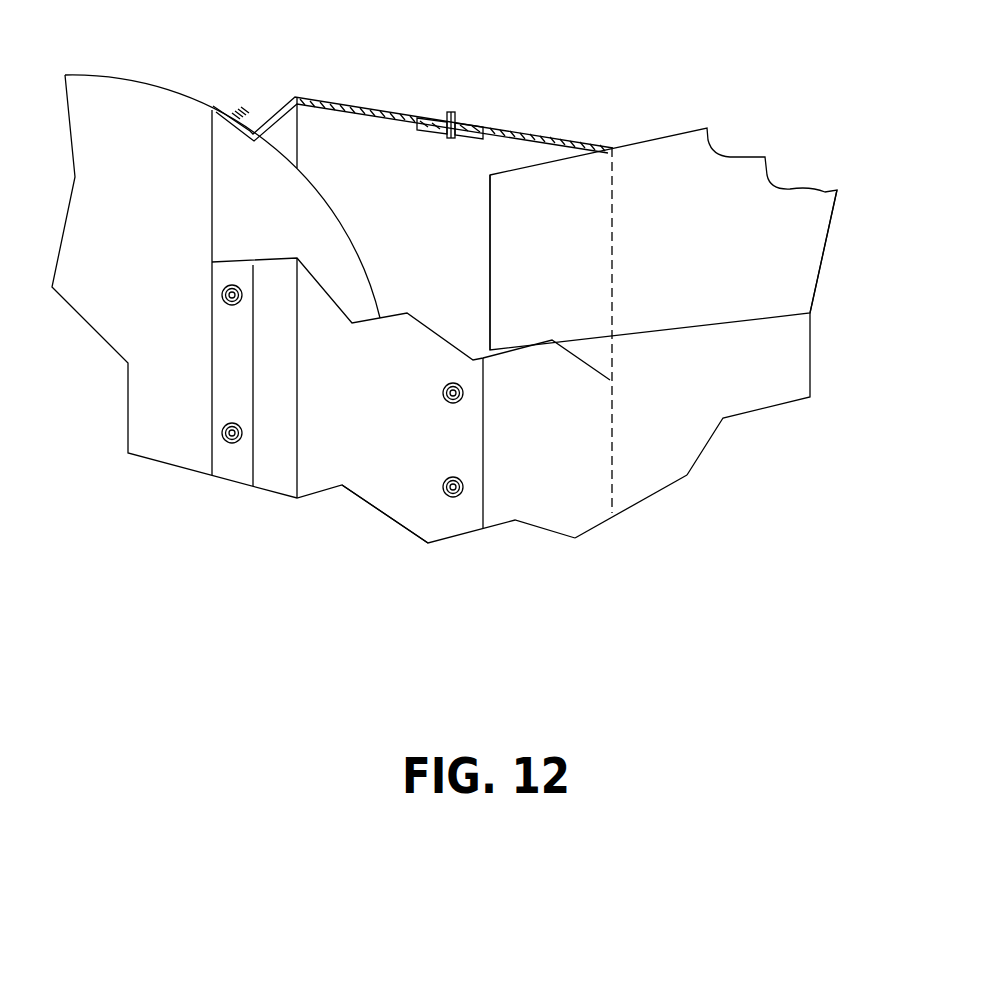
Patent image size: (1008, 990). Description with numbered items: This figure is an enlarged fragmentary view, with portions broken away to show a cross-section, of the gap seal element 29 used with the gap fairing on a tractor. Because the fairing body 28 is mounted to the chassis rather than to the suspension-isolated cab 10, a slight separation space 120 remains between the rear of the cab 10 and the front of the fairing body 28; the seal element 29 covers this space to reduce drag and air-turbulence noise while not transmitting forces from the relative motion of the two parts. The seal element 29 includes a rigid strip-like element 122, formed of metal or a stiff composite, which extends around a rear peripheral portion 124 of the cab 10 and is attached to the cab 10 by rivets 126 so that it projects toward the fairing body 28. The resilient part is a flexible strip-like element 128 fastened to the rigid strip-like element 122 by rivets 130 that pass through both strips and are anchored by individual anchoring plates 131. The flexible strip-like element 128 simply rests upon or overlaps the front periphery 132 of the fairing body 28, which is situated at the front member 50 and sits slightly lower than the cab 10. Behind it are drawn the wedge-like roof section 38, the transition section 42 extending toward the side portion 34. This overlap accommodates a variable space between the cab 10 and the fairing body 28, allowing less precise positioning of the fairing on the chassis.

The cab 10 is at (157, 127).
The fairing body 28 is at (752, 115).
The gap seal element 29 is at (388, 538).
The side portion 34 is at (662, 467).
The wedge-like roof section 38 is at (663, 137).
The transition section 42 is at (757, 245).
The front member 50 is at (570, 257).
The separation space 120 is at (352, 300).
The rigid strip-like element 122 is at (378, 117).
The rear peripheral portion 124 is at (337, 220).
The rivets 126 is at (243, 113).
The flexible strip-like element 128 is at (553, 133).
The rivets 130 is at (450, 140).
The anchoring plates 131 is at (420, 132).
The front periphery 132 is at (510, 253).